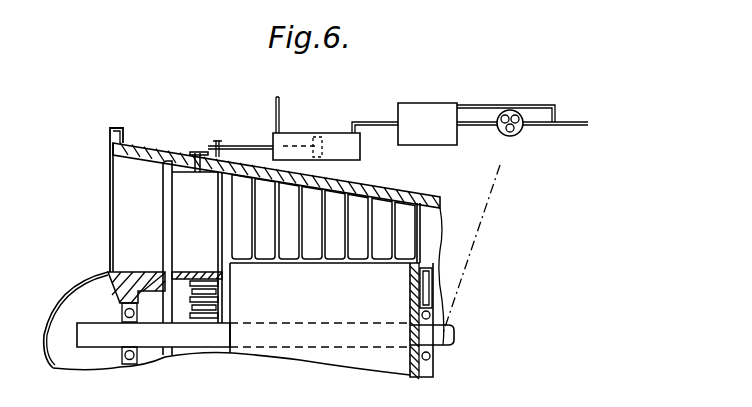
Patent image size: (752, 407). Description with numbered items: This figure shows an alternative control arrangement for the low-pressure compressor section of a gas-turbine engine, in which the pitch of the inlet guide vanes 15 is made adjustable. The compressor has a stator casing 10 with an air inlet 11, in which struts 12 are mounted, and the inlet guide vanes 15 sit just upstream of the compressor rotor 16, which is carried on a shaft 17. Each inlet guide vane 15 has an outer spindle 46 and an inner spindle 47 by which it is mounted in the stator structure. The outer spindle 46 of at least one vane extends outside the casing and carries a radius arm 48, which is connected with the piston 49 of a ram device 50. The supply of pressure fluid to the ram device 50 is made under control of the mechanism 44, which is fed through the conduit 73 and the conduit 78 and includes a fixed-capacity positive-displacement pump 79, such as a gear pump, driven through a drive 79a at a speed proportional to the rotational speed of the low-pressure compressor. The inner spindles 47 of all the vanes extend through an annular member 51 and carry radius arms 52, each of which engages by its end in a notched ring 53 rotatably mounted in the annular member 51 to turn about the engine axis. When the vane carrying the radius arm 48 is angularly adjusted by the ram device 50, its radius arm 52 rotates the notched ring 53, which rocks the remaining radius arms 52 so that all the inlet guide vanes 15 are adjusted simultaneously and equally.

The stator casing 10 is at (428, 358).
The air inlet 11 is at (115, 234).
The struts 12 is at (132, 212).
The inlet guide vanes 15 is at (193, 197).
The compressor rotor 16 is at (305, 352).
The shaft 17 is at (445, 335).
The control mechanism 44 is at (422, 102).
The outer spindle 46 is at (193, 158).
The inner spindle 47 is at (197, 270).
The radius arm 48 is at (203, 150).
The piston 49 is at (323, 132).
The ram device 50 is at (293, 132).
The annular member 51 is at (173, 273).
The radius arms 52 is at (202, 319).
The notched ring 53 is at (212, 276).
The conduit 73 is at (276, 97).
The conduit 78 is at (381, 119).
The positive-displacement pump 79 is at (520, 133).
The drive 79a is at (490, 202).